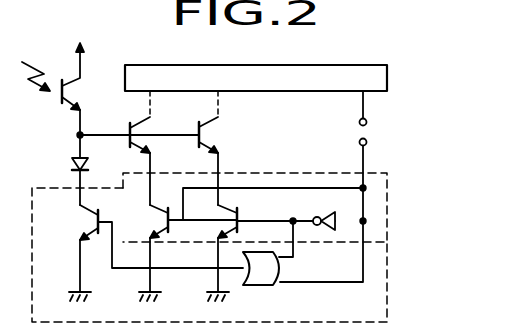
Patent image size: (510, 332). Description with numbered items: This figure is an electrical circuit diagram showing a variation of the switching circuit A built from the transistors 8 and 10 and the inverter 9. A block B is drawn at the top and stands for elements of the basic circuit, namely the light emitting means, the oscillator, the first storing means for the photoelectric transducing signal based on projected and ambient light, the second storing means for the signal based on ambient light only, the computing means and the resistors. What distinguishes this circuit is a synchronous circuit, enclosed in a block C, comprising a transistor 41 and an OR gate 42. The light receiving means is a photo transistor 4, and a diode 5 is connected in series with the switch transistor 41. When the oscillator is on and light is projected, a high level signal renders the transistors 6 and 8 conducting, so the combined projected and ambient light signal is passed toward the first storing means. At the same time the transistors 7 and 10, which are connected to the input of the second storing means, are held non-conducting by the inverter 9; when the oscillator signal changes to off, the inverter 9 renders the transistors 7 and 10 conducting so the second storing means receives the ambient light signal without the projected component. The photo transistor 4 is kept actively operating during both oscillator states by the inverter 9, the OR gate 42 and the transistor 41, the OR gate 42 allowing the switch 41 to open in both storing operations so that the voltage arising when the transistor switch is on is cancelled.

The photo transistor 4 is at (68, 107).
The diode 5 is at (70, 162).
The transistor 6 is at (143, 115).
The transistor 7 is at (210, 133).
The transistor 8 is at (158, 222).
The inverter 9 is at (333, 213).
The transistor 10 is at (228, 222).
The transistor 41 is at (88, 222).
The OR gate 42 is at (272, 283).
The switching circuit A is at (388, 212).
The block B is at (388, 78).
The block C is at (388, 300).